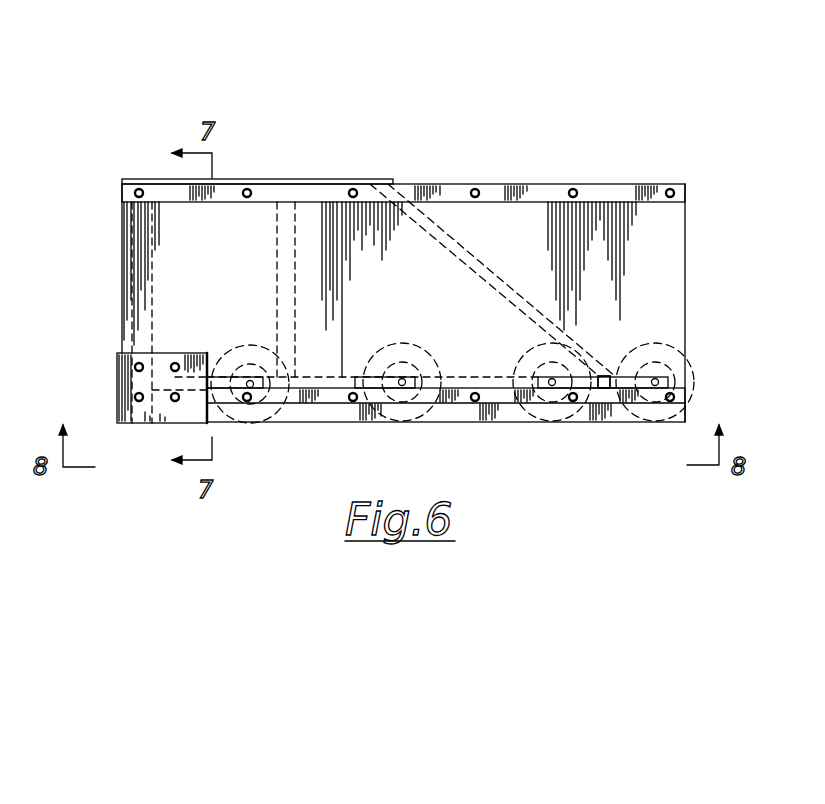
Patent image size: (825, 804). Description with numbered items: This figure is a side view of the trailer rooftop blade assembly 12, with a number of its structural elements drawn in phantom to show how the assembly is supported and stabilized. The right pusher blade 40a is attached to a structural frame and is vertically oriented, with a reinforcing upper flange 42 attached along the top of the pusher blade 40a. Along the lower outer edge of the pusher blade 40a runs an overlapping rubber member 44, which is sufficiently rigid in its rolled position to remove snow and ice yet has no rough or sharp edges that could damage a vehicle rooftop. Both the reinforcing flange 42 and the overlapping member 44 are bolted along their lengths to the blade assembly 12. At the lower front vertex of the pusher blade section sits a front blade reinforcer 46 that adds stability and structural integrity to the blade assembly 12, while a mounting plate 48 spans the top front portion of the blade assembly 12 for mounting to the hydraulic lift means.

The trailer rooftop blade assembly 12 is at (573, 127).
The right pusher blade 40a is at (672, 300).
The reinforcing upper flange 42 is at (600, 188).
The overlapping rubber member 44 is at (477, 422).
The front blade reinforcer 46 is at (127, 367).
The mounting plate 48 is at (333, 180).